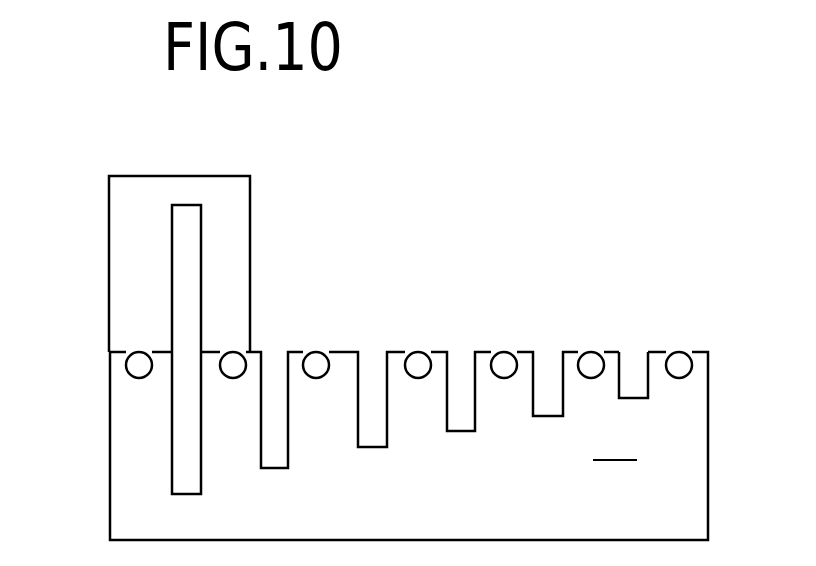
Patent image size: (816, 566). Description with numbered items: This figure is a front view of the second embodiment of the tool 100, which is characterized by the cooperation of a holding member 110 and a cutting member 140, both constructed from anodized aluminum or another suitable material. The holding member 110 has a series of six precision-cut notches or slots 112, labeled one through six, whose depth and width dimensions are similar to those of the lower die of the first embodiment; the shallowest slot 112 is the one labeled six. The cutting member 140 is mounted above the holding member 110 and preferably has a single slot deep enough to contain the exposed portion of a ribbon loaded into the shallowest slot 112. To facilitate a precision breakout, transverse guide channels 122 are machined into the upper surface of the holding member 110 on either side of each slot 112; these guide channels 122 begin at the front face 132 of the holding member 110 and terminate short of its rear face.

The tool 100 is at (100, 177).
The holding member 110 is at (110, 463).
The slot 112 is at (633, 355).
The transverse guide channel 122 is at (590, 350).
The front face 132 is at (615, 446).
The cutting member 140 is at (109, 262).